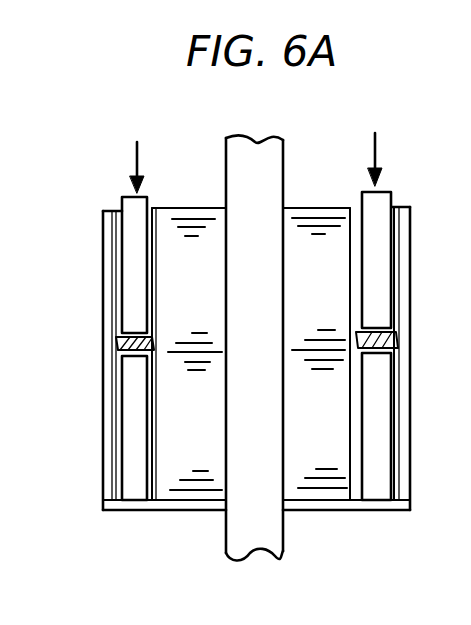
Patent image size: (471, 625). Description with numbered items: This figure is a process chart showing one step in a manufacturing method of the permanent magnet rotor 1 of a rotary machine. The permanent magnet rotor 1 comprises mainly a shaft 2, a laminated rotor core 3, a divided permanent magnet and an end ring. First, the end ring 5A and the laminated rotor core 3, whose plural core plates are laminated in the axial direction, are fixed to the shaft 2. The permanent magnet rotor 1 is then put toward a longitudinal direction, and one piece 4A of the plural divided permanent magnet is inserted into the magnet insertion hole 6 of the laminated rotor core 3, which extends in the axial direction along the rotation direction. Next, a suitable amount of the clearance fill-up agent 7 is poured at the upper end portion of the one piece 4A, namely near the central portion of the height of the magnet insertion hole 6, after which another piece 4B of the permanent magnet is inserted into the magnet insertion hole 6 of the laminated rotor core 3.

The permanent magnet rotor 1 is at (412, 480).
The shaft 2 is at (278, 527).
The laminated rotor core 3 is at (167, 410).
The one piece of the permanent magnet 4A is at (133, 465).
The another piece of the permanent magnet 4B is at (130, 245).
The end ring 5A is at (183, 502).
The magnet insertion hole 6 is at (113, 285).
The clearance fill-up agent 7 is at (120, 345).